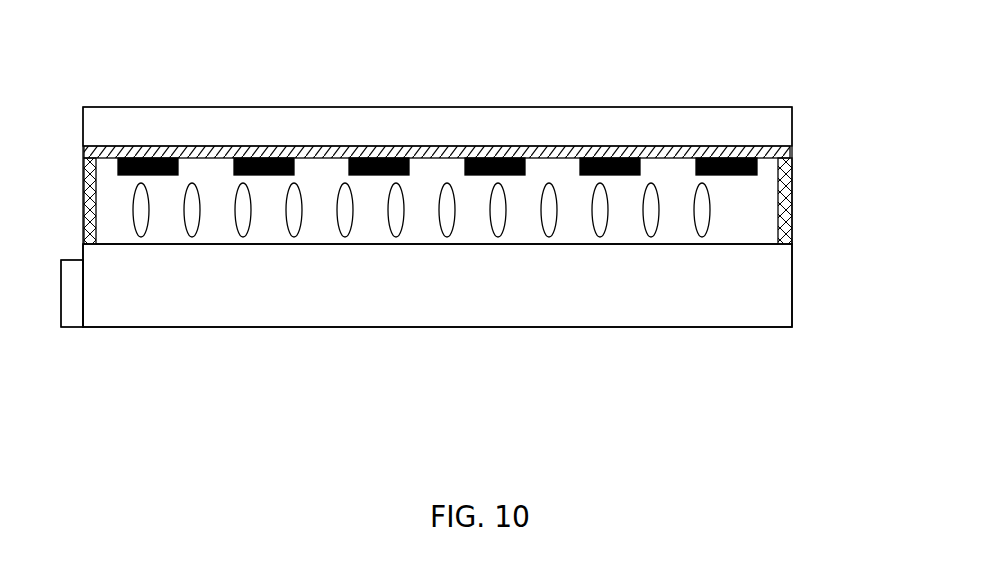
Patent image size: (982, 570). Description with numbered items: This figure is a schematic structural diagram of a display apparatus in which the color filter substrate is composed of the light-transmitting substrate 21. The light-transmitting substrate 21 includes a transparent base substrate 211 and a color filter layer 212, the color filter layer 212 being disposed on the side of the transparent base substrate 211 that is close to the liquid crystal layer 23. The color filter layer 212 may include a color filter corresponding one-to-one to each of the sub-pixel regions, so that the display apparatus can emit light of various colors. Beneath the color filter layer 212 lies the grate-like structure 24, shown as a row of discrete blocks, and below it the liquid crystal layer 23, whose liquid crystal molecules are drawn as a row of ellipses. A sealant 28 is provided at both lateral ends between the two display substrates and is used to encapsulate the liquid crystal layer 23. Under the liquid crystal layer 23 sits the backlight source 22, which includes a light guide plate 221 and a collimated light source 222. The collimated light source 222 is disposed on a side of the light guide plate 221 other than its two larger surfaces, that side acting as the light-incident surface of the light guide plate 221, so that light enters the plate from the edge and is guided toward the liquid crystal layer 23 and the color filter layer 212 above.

The light-transmitting substrate 21 is at (855, 95).
The transparent base substrate 211 is at (802, 117).
The color filter layer 212 is at (827, 43).
The grate-like structure 24 is at (767, 166).
The liquid crystal layer 23 is at (765, 192).
The sealant 28 is at (73, 202).
The backlight source 22 is at (426, 358).
The light guide plate 221 is at (138, 340).
The collimated light source 222 is at (72, 340).